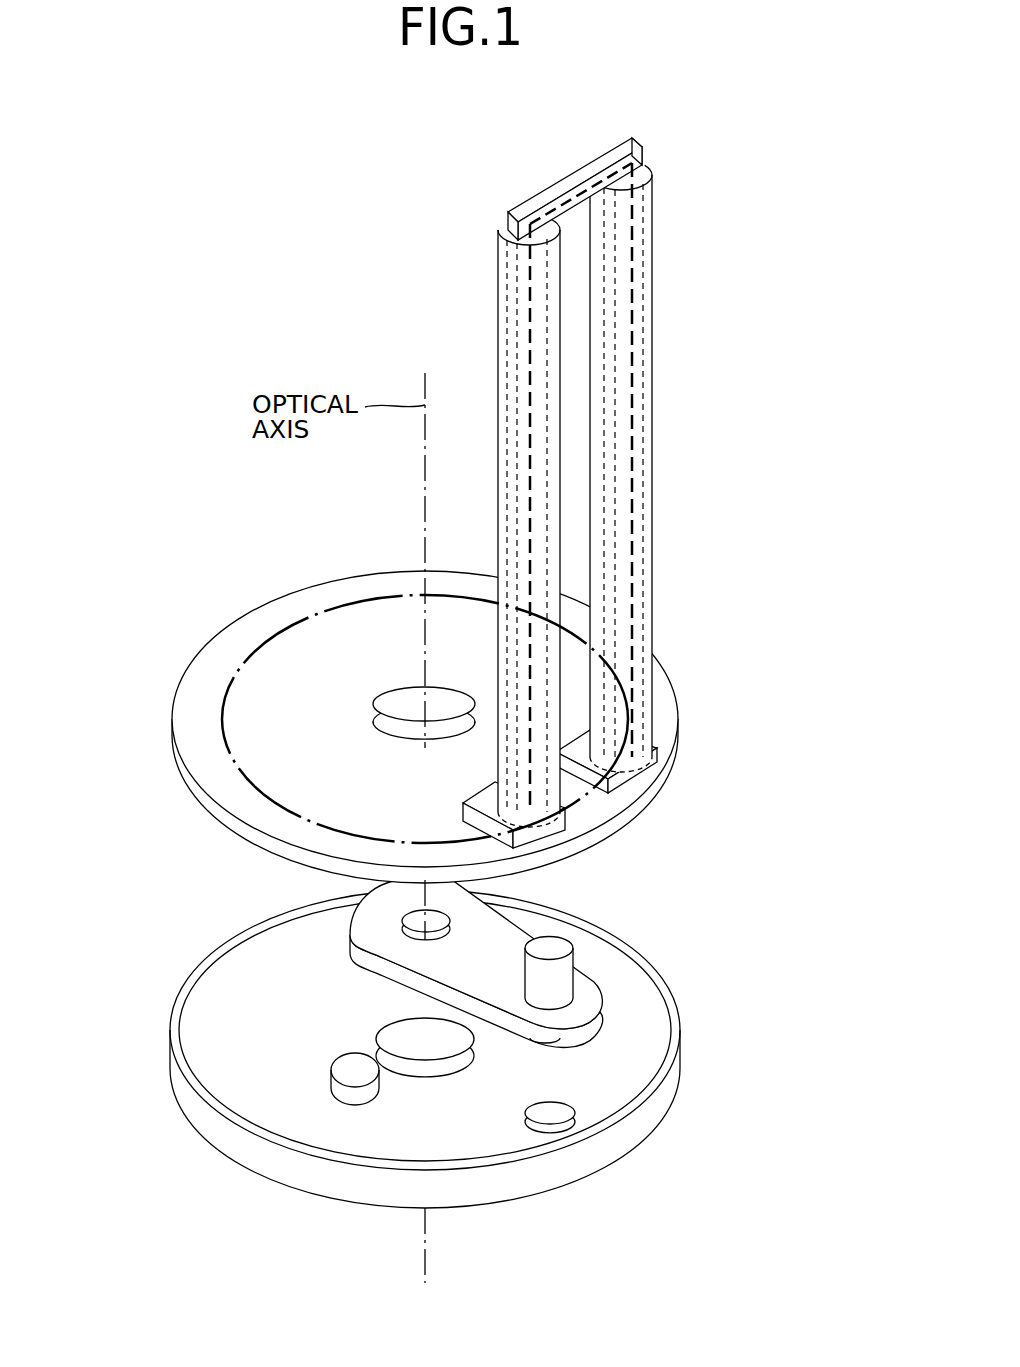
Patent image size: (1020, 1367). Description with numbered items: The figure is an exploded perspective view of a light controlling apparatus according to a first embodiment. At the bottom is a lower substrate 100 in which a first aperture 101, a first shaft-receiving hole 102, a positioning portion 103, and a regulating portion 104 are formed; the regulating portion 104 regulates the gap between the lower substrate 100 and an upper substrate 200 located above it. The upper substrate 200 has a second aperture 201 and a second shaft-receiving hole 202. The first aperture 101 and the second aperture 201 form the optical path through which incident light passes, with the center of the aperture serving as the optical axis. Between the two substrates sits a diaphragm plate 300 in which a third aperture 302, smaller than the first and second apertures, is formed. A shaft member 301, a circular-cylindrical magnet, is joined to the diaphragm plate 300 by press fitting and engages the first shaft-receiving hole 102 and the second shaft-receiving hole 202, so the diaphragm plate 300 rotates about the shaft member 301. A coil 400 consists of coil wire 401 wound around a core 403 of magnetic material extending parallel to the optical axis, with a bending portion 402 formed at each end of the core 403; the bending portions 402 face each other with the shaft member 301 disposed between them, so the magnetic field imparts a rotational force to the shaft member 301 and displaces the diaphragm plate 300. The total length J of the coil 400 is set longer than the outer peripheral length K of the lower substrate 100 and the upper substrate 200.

The lower substrate 100 is at (245, 987).
The first aperture 101 is at (377, 1043).
The first shaft-receiving hole 102 is at (558, 1105).
The positioning portion 103 is at (331, 1078).
The regulating portion 104 is at (603, 1128).
The upper substrate 200 is at (223, 809).
The second aperture 201 is at (377, 735).
The second shaft-receiving hole 202 is at (603, 786).
The diaphragm plate 300 is at (473, 912).
The shaft member 301 is at (563, 962).
The third aperture 302 is at (402, 917).
The coil 400 is at (652, 488).
The coil wire 401 is at (634, 425).
The bending portion 402 is at (657, 750).
The core 403 is at (643, 243).
The total length of the coil J is at (532, 273).
The outer peripheral length K is at (317, 610).